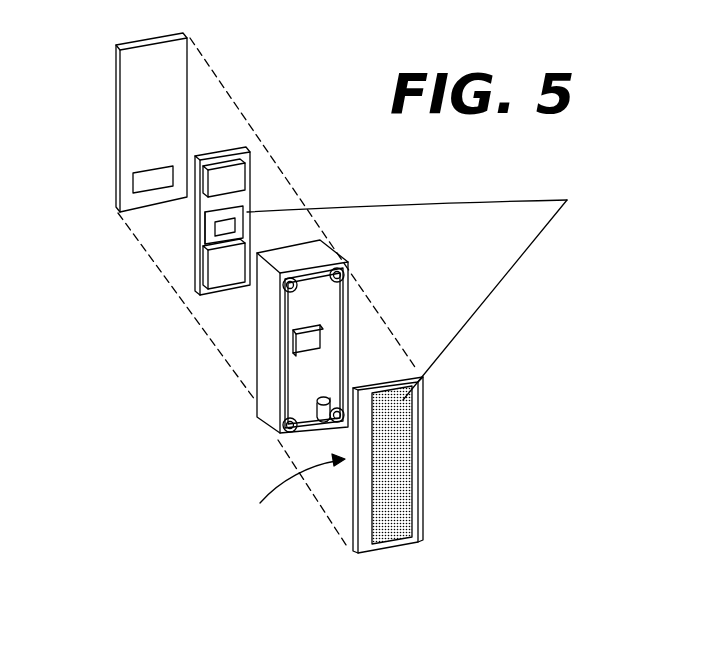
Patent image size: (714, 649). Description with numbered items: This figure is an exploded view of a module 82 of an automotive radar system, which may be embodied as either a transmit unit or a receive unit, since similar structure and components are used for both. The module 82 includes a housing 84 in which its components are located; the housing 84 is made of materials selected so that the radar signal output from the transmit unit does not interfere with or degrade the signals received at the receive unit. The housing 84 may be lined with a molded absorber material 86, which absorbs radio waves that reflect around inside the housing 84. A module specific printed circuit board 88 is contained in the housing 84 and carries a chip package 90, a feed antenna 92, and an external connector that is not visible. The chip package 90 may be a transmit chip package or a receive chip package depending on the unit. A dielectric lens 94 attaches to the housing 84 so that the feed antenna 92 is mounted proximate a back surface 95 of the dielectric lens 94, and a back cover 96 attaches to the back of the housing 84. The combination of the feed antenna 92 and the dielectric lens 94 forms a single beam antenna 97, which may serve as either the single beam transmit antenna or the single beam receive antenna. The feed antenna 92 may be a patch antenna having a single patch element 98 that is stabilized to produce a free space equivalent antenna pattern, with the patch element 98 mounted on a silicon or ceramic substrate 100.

The module 82 is at (582, 520).
The housing 84 is at (262, 410).
The molded absorber material 86 is at (333, 327).
The printed circuit board 88 is at (227, 152).
The chip package 90 is at (233, 180).
The feed antenna 92 is at (253, 203).
The dielectric lens 94 is at (405, 420).
The back surface 95 is at (289, 493).
The back cover 96 is at (128, 78).
The single beam antenna 97 is at (567, 200).
The patch element 98 is at (233, 227).
The substrate 100 is at (208, 228).